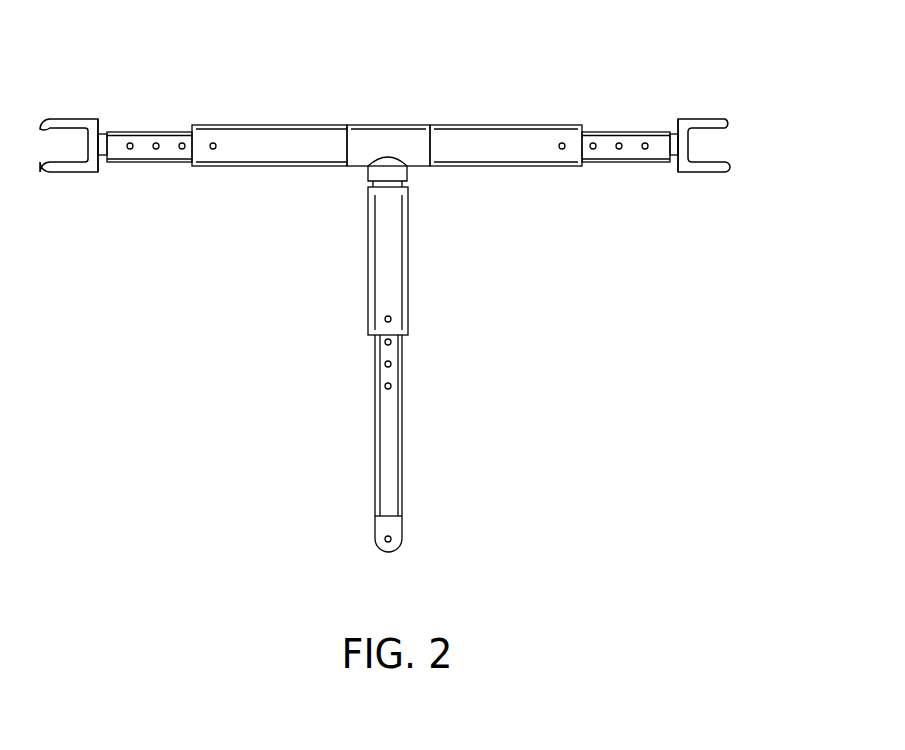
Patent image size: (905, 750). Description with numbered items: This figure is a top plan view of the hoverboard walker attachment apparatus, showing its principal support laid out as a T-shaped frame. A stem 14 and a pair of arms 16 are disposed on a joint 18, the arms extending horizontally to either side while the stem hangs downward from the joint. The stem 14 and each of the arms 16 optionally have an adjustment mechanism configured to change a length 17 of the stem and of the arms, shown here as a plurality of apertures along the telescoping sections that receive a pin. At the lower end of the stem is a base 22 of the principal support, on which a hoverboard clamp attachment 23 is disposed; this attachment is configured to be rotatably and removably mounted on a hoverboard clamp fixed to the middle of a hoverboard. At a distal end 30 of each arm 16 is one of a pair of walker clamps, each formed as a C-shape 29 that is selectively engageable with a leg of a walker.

The stem 14 is at (397, 317).
The pair of arms 16 is at (255, 135).
The length 17 is at (399, 391).
The joint 18 is at (386, 138).
The base 22 is at (383, 513).
The hoverboard clamp attachment 23 is at (448, 566).
The C-shape 29 is at (707, 172).
The distal end 30 is at (676, 132).